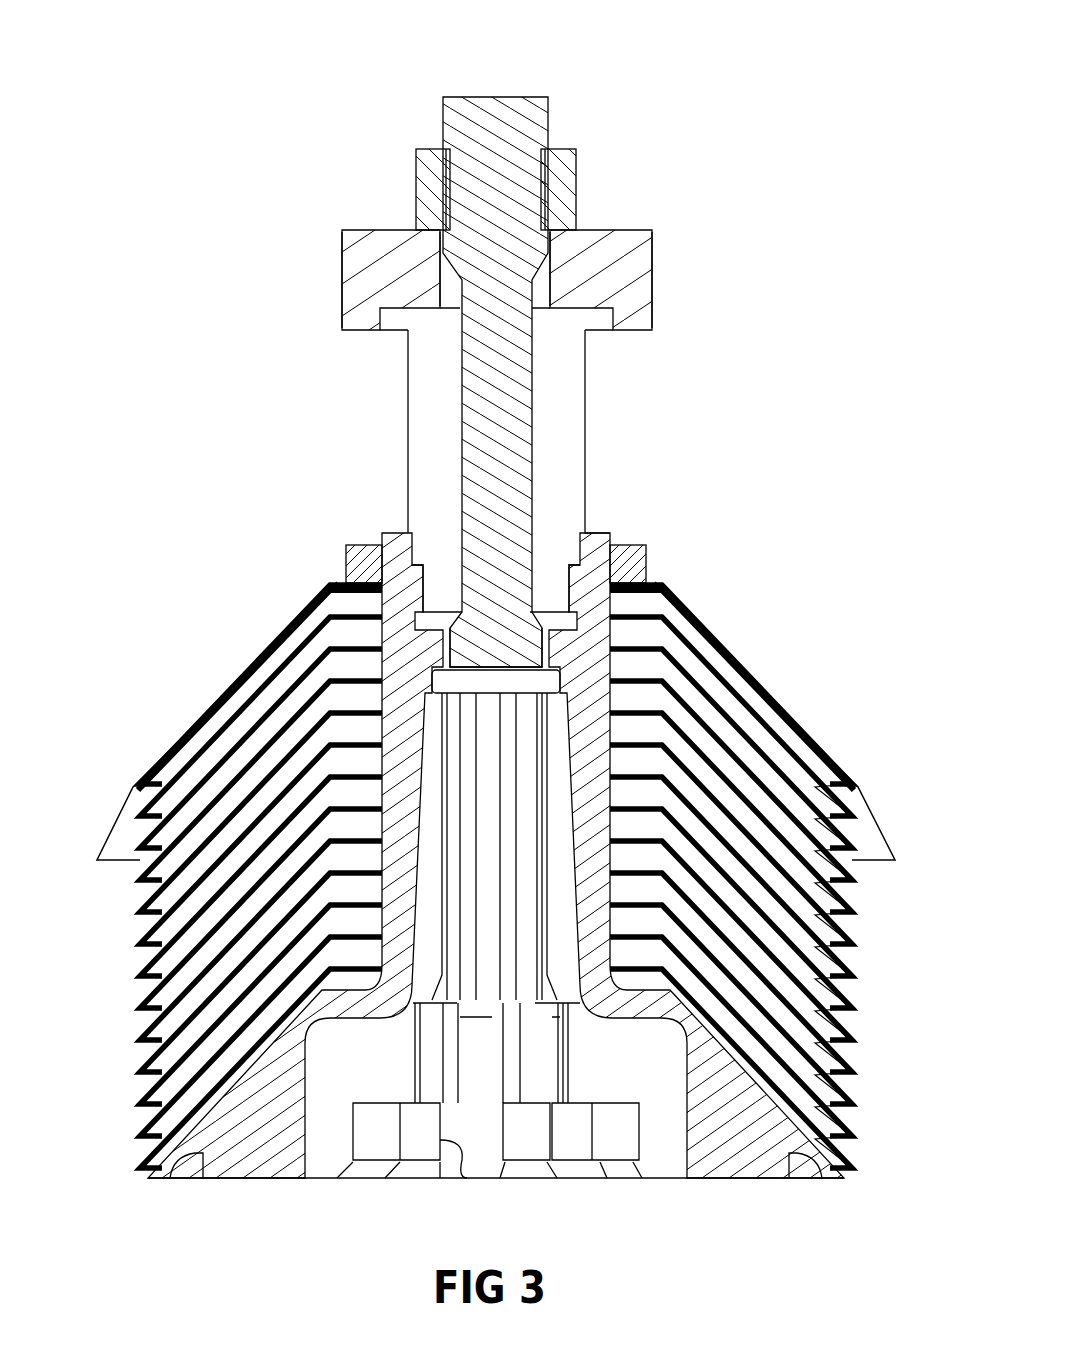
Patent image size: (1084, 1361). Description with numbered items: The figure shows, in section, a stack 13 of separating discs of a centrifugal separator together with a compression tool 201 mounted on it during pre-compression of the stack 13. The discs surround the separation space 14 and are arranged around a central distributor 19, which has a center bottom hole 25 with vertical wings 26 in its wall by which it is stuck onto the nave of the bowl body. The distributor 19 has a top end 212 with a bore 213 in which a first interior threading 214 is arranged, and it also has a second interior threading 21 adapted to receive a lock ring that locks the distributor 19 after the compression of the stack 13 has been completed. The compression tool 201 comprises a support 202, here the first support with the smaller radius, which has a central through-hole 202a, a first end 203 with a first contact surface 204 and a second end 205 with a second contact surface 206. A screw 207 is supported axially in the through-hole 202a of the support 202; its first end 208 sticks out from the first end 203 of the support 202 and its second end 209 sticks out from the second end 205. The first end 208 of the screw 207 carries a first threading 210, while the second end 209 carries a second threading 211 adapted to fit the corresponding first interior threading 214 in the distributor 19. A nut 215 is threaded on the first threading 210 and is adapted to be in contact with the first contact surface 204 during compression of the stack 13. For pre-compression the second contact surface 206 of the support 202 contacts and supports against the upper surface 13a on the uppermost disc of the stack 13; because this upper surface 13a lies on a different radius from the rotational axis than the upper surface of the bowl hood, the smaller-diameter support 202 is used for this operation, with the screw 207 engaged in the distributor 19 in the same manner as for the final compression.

The stack of separating discs 13 is at (122, 992).
The upper surface on the top disc 13a is at (740, 644).
The separation space 14 is at (790, 992).
The distributor 19 is at (268, 1128).
The second interior threading 21 is at (447, 593).
The center bottom hole 25 is at (650, 1087).
The vertical wings 26 is at (577, 1060).
The compression tool 201 is at (682, 277).
The support 202 is at (342, 278).
The central through-hole 202a is at (548, 283).
The first end 203 is at (653, 258).
The first contact surface 204 is at (440, 250).
The second end 205 is at (340, 556).
The second contact surface 206 is at (356, 592).
The screw 207 is at (462, 446).
The first end of the screw 208 is at (532, 90).
The second end of the screw 209 is at (535, 646).
The first threading 210 is at (448, 200).
The second threading 211 is at (447, 652).
The top end 212 is at (597, 543).
The bore 213 is at (420, 580).
The first interior threading 214 is at (450, 667).
The nut 215 is at (563, 187).